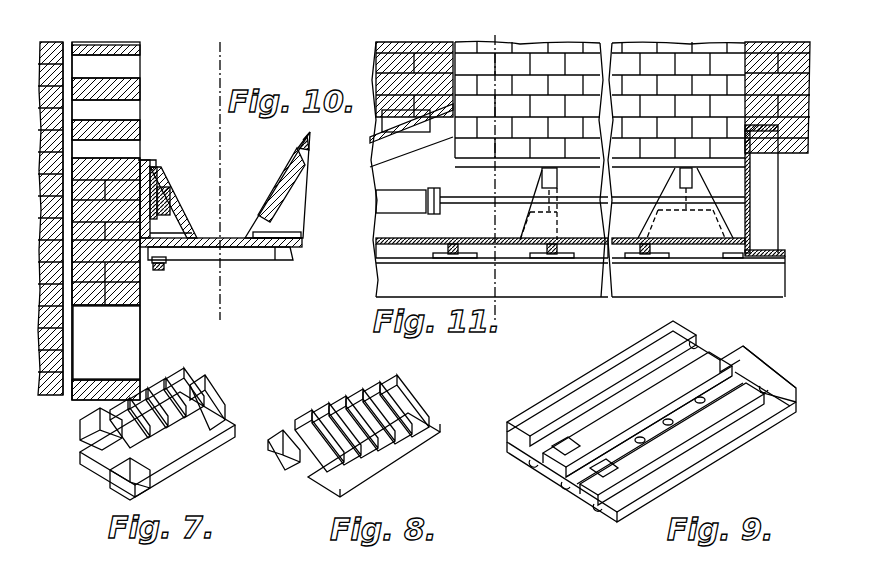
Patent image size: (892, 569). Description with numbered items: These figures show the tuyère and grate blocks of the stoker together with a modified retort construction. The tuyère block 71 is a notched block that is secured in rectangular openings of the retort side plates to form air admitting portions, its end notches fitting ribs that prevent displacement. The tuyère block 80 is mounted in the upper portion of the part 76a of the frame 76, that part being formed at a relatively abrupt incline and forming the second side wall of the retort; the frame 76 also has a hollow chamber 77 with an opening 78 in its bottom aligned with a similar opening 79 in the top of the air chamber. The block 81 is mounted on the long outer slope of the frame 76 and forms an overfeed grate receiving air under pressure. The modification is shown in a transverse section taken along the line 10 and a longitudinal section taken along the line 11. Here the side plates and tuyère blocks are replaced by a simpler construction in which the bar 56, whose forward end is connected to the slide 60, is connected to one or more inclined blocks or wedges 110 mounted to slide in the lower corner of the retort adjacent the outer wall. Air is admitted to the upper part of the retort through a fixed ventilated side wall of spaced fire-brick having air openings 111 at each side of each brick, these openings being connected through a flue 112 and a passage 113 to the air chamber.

In FIG. 11, the section line 10— 10 is at (505, 175).
In FIG. 10, the section line 11— 11 is at (233, 188).
In FIG. 10, the bar 56 is at (165, 212).
In FIG. 11, the bar 56 is at (467, 203).
In FIG. 11, the slide 60 is at (405, 190).
In FIG. 7, the tuyère block 71 is at (120, 485).
In FIG. 10, the frame 76 is at (304, 178).
In FIG. 10, the part of frame 76a is at (265, 214).
In FIG. 10, the hollow chamber 77 is at (293, 238).
In FIG. 10, the opening 78 is at (293, 250).
In FIG. 10, the opening 79 is at (276, 249).
In FIG. 10, the tuyère block 80 is at (287, 160).
In FIG. 8, the tuyère block 80 is at (413, 403).
In FIG. 9, the block 81 is at (563, 393).
In FIG. 10, the inclined block or wedge 110 is at (172, 230).
In FIG. 11, the inclined block or wedge 110 is at (541, 185).
In FIG. 10, the air opening 111 is at (125, 110).
In FIG. 11, the air opening 111 is at (565, 62).
In FIG. 10, the flue 112 is at (65, 150).
In FIG. 10, the passage 113 is at (106, 342).